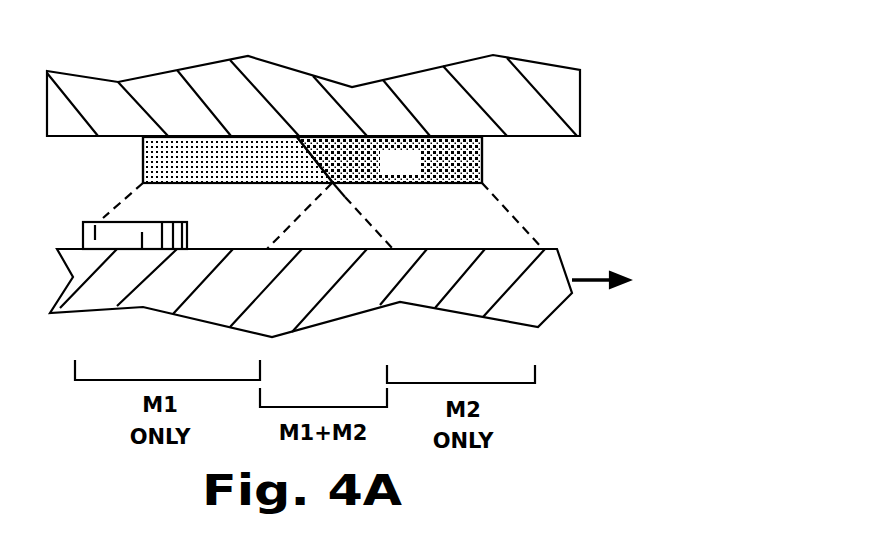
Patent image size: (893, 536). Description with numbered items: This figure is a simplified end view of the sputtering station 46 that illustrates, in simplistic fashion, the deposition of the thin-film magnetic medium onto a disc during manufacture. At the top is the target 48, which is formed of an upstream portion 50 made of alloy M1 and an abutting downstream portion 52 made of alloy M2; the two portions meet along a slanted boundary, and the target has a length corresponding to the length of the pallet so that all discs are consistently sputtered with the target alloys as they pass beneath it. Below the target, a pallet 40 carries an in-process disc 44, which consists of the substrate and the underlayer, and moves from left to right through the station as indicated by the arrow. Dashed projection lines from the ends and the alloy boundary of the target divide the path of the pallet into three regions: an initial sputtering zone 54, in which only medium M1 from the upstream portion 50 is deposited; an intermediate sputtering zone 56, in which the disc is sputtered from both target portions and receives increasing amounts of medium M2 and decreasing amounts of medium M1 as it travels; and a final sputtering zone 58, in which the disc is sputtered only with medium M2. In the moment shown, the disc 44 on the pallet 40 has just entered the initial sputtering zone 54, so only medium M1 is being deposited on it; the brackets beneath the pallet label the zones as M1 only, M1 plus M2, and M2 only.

The pallet 40 is at (103, 312).
The in-process disc 44 is at (150, 238).
The sputtering station 46 is at (254, 150).
The target 48 is at (366, 112).
The upstream portion 50 is at (200, 136).
The downstream portion 52 is at (452, 137).
The initial sputtering zone 54 is at (217, 230).
The intermediate sputtering zone 56 is at (318, 223).
The final sputtering zone 58 is at (459, 230).